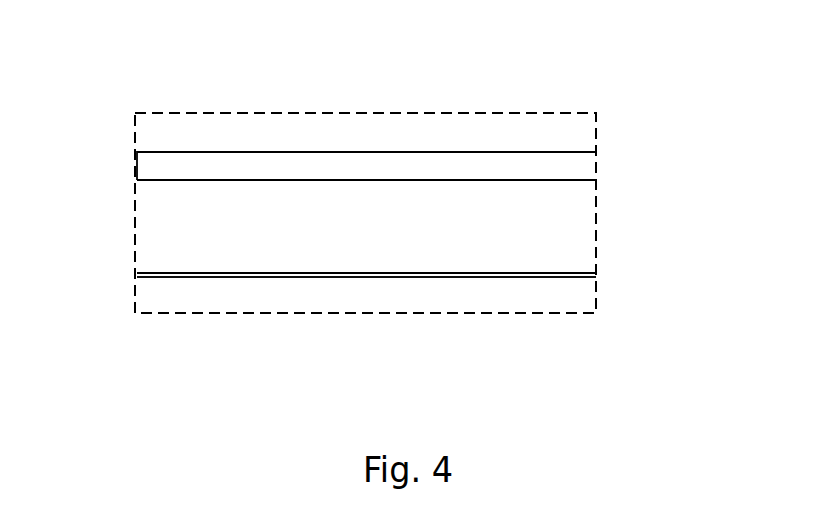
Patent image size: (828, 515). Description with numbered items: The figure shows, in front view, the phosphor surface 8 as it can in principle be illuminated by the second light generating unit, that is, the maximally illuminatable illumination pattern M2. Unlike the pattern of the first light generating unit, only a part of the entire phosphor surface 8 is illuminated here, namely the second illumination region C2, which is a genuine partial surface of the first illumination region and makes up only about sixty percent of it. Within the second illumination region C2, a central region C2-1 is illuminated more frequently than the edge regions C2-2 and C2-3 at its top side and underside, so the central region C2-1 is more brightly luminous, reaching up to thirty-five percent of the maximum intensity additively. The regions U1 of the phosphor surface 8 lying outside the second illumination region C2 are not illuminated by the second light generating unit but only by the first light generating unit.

The phosphor surface 8 is at (596, 138).
The regions of the phosphor surface outside the second illumination region U1 is at (197, 133).
The second illumination region C2 is at (315, 152).
The edge region at the top side of the second illumination region C2-2 is at (128, 151).
The central region of the second illumination region C2-1 is at (128, 183).
The edge region at the underside of the second illumination region C2-3 is at (190, 278).
The maximally illuminatable illumination pattern M2 is at (365, 202).